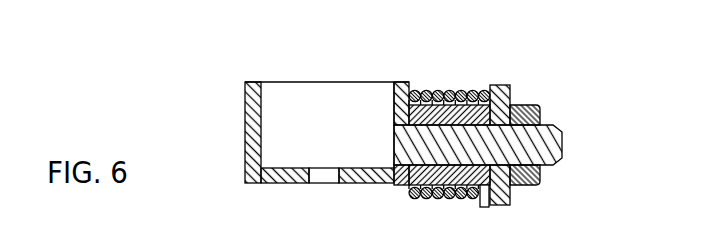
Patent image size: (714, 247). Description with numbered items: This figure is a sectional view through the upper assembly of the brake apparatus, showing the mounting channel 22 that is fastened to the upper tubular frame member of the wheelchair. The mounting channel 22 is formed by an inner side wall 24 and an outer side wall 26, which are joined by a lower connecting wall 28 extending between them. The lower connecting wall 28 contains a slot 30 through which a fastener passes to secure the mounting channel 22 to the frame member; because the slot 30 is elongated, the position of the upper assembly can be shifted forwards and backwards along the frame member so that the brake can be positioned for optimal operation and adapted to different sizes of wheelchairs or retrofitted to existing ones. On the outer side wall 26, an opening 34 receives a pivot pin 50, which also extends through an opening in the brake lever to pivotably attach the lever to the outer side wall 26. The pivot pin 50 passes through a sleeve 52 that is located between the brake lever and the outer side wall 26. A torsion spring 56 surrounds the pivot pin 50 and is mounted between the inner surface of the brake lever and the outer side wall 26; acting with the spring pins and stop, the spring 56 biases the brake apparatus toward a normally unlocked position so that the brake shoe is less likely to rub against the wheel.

The mounting channel 22 is at (245, 183).
The inner side wall 24 is at (246, 125).
The outer side wall 26 is at (401, 82).
The lower connecting wall 28 is at (279, 182).
The slot 30 is at (327, 183).
The opening 34 is at (406, 166).
The pivot pin 50 is at (552, 132).
The sleeve 52 is at (482, 107).
The torsion spring 56 is at (443, 92).